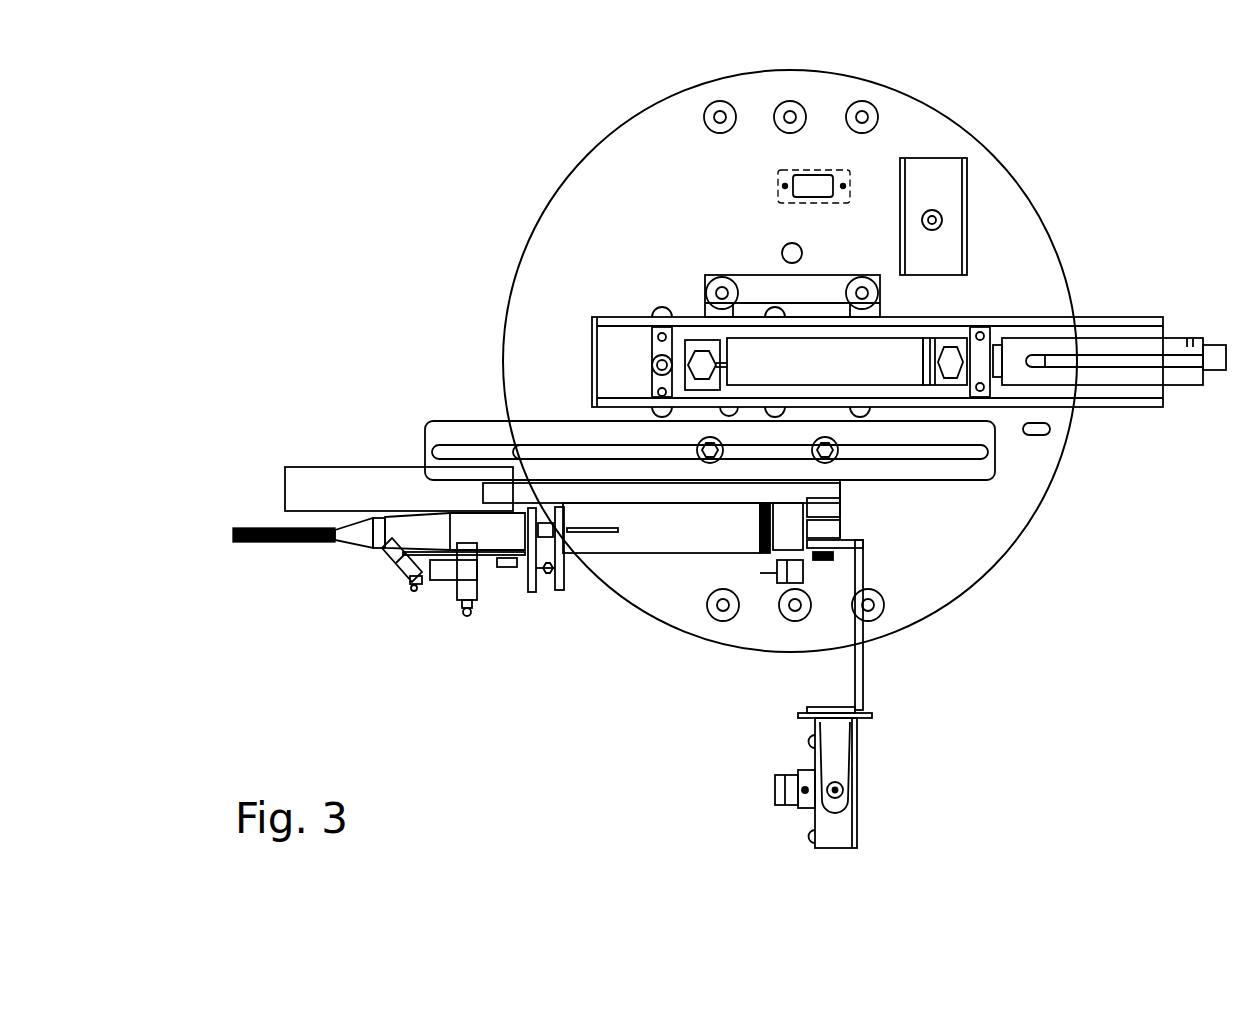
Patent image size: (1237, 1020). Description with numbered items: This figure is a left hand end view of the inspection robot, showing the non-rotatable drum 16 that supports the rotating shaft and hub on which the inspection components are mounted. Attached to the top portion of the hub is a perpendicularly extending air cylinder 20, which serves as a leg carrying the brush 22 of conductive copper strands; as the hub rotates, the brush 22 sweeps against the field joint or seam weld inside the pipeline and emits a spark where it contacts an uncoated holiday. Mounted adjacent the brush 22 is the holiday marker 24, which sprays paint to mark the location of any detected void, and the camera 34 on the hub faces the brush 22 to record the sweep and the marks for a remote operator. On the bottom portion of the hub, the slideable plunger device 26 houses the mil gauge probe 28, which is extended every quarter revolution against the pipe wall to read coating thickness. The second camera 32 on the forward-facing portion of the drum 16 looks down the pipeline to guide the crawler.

The non-rotatable drum 16 is at (687, 88).
The air cylinder 20 is at (650, 555).
The brush 22 is at (228, 528).
The holiday marker 24 is at (388, 548).
The slideable plunger device 26 is at (1190, 337).
The mil gauge probe 28 is at (1222, 372).
The second camera 32 is at (986, 191).
The camera 34 is at (812, 735).